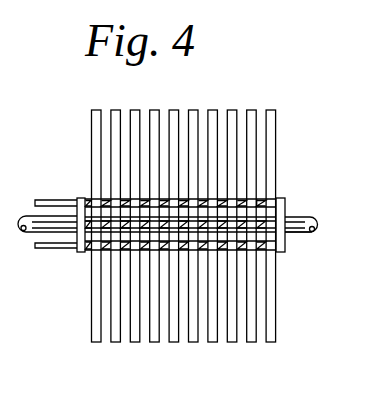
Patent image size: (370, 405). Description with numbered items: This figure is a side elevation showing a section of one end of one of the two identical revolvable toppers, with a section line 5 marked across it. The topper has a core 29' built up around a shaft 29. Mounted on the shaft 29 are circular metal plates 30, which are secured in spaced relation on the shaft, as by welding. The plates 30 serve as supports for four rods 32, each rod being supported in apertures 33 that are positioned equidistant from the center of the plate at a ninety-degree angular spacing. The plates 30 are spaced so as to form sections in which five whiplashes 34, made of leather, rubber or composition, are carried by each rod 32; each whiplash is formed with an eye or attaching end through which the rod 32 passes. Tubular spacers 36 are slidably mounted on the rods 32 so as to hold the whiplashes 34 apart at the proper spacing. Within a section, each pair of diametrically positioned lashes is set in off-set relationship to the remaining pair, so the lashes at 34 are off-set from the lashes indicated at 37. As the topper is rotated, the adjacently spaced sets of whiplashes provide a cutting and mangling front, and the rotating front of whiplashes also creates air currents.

The section line 5- 5 is at (130, 75).
The shaft 29 is at (178, 212).
The core 29' is at (305, 243).
The circular metal plates 30 is at (286, 212).
The rods 32 is at (52, 200).
The apertures 33 is at (281, 205).
The whiplashes 34 is at (276, 120).
The tubular spacers 36 is at (263, 200).
The whiplashes 37 is at (284, 251).